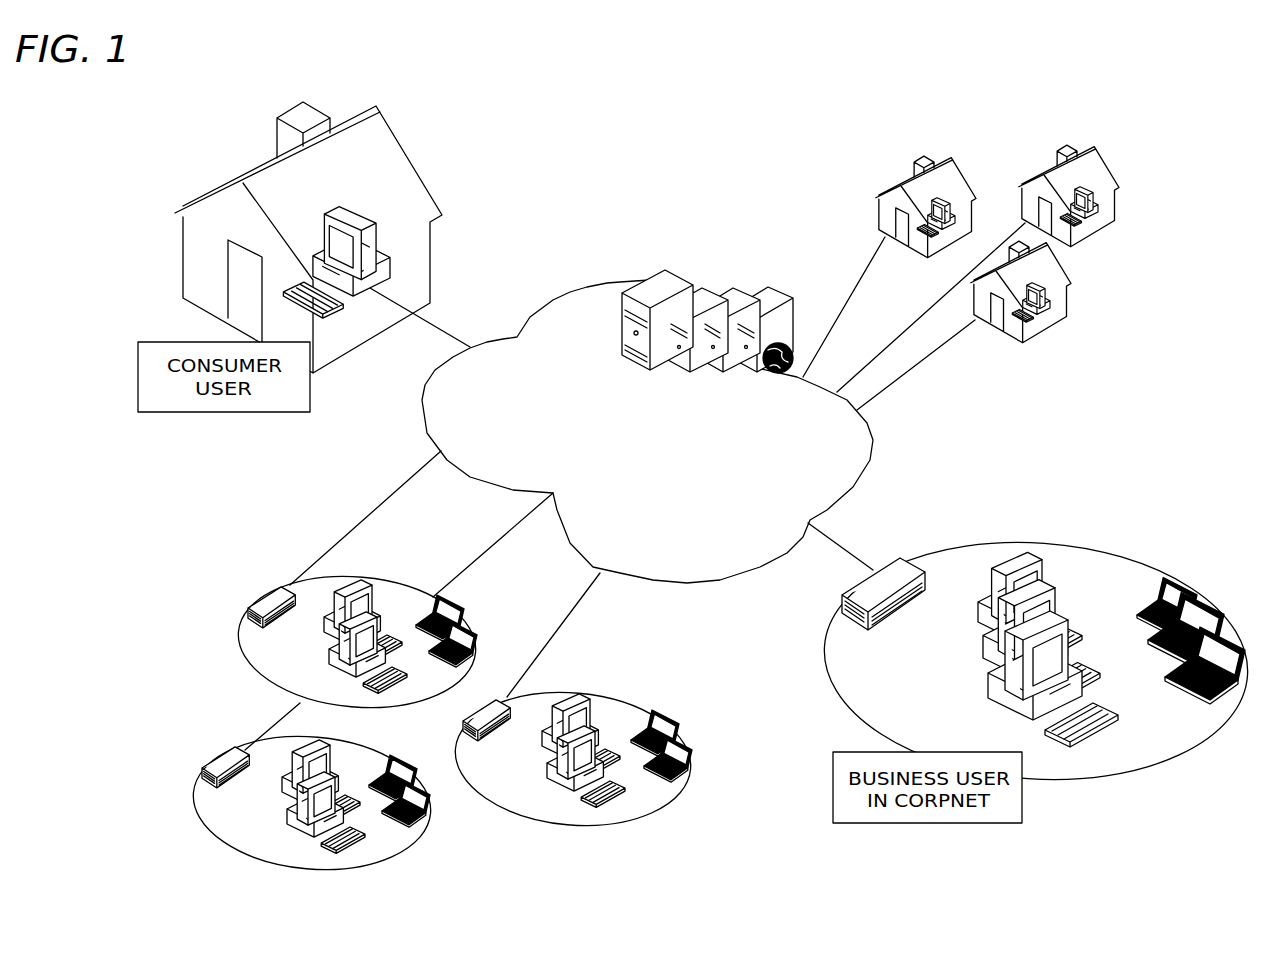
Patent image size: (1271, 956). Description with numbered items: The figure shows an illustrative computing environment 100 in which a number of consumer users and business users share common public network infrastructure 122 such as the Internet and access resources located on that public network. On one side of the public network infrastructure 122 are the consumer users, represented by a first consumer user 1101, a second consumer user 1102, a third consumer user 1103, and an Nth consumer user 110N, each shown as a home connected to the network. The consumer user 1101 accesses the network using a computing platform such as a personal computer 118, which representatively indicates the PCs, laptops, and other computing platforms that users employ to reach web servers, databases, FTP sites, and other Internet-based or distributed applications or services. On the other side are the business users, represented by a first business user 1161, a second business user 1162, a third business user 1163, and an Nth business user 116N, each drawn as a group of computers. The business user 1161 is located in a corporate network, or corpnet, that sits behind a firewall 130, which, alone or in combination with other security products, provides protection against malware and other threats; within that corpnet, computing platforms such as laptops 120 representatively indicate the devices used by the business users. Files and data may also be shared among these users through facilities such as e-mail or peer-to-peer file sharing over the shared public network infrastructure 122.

The computing environment 100 is at (616, 136).
The consumer user 1101 is at (378, 107).
The consumer user 1102 is at (952, 157).
The consumer user 1103 is at (1095, 147).
The consumer user 110N is at (1070, 284).
The personal computer 118 is at (367, 228).
The public network infrastructure 122 is at (590, 282).
The business user 1161 is at (1103, 548).
The business user 1162 is at (404, 578).
The business user 1163 is at (616, 693).
The business user 116N is at (213, 841).
The laptop 120 is at (1182, 572).
The firewall 130 is at (902, 551).